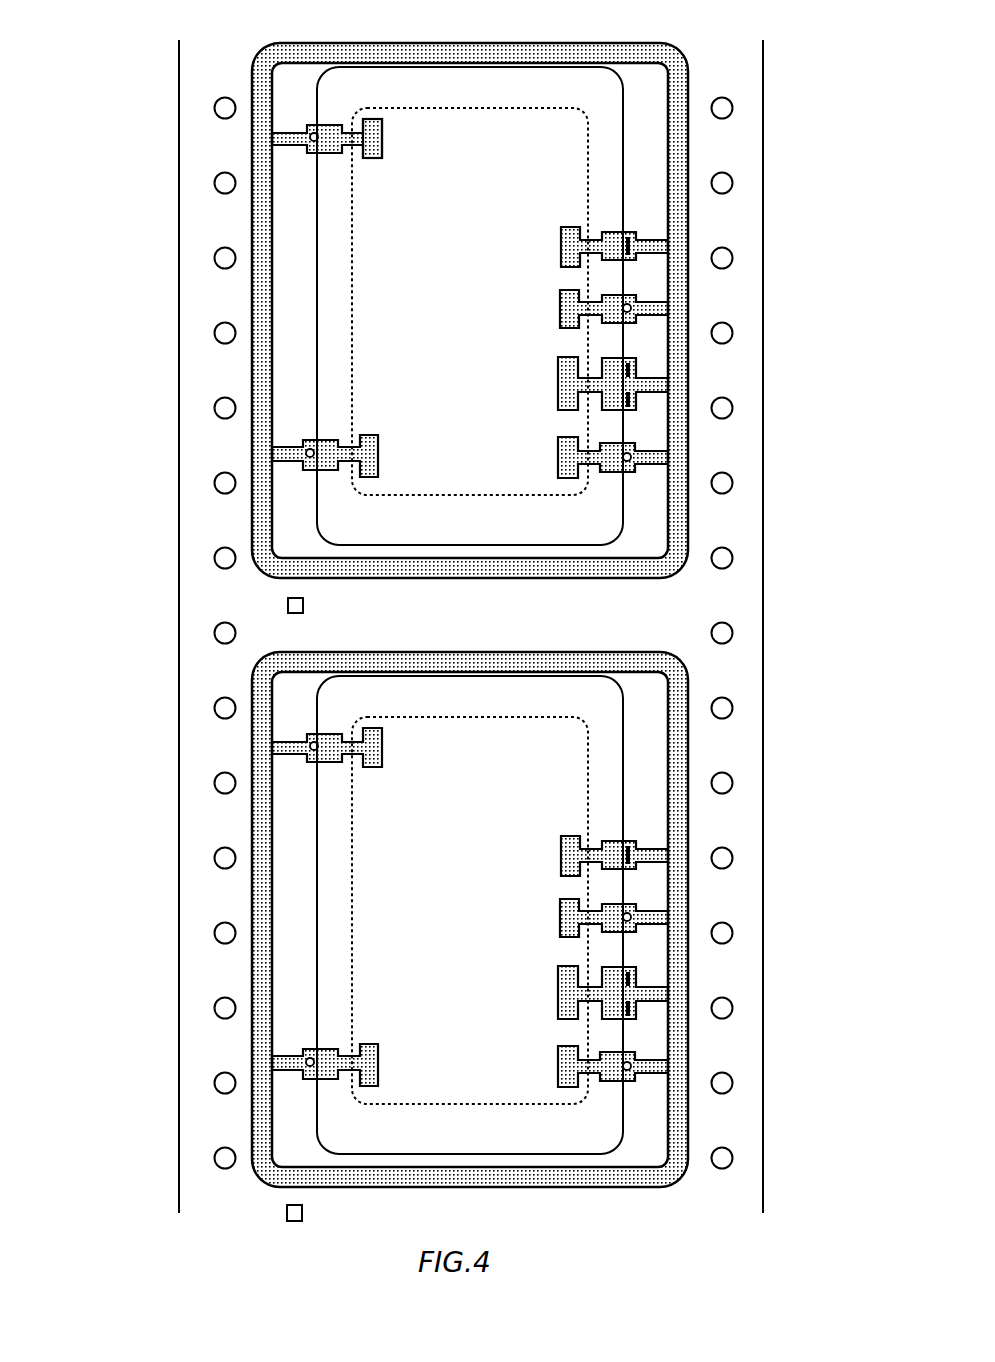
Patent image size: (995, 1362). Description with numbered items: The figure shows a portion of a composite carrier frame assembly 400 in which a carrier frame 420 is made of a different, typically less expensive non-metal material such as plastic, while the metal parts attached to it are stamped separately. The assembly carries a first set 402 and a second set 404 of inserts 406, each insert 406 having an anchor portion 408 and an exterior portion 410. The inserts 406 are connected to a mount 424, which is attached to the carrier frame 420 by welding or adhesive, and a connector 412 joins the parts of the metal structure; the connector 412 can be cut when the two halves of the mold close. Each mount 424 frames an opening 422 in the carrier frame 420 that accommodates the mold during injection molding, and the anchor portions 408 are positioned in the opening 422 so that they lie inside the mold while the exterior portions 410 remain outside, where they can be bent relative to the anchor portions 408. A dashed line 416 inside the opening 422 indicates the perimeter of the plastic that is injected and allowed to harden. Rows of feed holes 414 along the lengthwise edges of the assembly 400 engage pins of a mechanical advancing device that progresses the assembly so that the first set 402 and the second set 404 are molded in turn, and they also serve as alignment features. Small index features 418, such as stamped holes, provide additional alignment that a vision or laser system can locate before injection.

The composite carrier frame assembly 400 is at (440, 630).
The first set of inserts 402 is at (460, 340).
The second set of inserts 404 is at (243, 887).
The insert 406 is at (433, 265).
The anchor portion 408 is at (370, 140).
The exterior portion 410 is at (316, 134).
The connector 412 is at (295, 136).
The feed hole 414 is at (718, 258).
The dashed line 416 is at (488, 495).
The index feature 418 is at (283, 611).
The carrier frame 420 is at (740, 90).
The opening 422 is at (612, 543).
The mount 424 is at (682, 147).